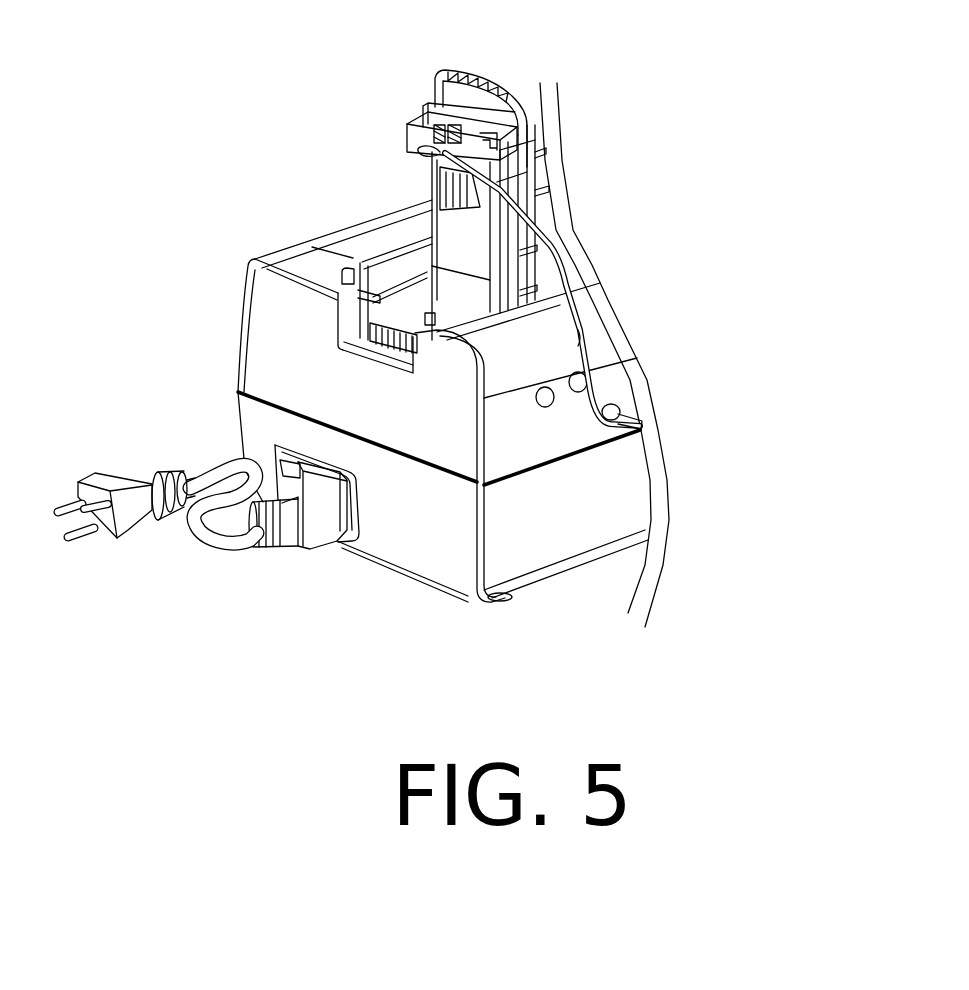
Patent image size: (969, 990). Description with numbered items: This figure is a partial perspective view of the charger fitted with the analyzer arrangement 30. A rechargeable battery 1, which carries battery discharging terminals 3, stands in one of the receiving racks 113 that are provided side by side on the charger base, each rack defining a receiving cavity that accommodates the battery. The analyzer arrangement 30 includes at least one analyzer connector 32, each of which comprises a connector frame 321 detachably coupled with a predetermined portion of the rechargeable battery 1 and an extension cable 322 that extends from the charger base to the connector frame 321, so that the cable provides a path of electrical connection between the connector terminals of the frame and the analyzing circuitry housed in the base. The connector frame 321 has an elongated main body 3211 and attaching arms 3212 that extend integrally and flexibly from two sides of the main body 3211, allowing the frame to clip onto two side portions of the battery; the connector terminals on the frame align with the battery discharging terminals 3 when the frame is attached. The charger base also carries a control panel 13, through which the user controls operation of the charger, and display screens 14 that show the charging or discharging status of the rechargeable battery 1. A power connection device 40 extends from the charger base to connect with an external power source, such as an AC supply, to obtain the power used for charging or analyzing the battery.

The rechargeable battery 1 is at (450, 233).
The battery discharging terminals 3 is at (420, 102).
The analyzer arrangement 30 is at (377, 138).
The display screens 14 is at (355, 250).
The receiving racks 113 is at (412, 308).
The elongated main body 3211 is at (468, 125).
The connector frame 321 is at (485, 138).
The attaching arms 3212 is at (516, 176).
The analyzer connectors 32 is at (613, 258).
The extension cables 322 is at (580, 333).
The control panel 13 is at (546, 402).
The power connection device 40 is at (322, 537).